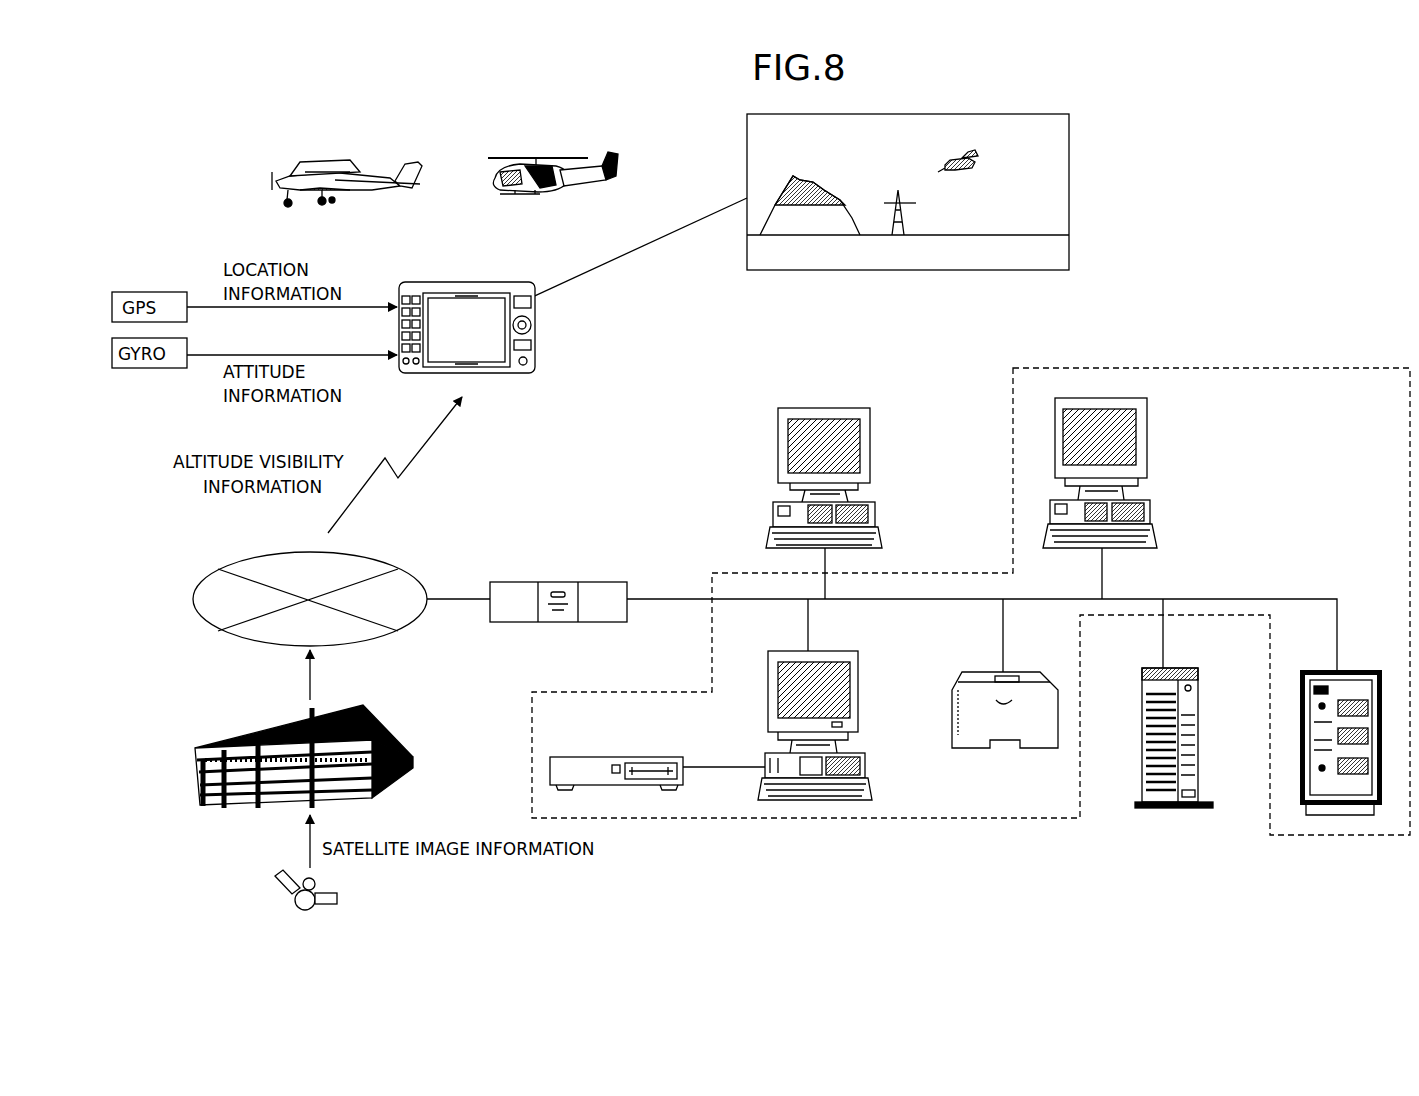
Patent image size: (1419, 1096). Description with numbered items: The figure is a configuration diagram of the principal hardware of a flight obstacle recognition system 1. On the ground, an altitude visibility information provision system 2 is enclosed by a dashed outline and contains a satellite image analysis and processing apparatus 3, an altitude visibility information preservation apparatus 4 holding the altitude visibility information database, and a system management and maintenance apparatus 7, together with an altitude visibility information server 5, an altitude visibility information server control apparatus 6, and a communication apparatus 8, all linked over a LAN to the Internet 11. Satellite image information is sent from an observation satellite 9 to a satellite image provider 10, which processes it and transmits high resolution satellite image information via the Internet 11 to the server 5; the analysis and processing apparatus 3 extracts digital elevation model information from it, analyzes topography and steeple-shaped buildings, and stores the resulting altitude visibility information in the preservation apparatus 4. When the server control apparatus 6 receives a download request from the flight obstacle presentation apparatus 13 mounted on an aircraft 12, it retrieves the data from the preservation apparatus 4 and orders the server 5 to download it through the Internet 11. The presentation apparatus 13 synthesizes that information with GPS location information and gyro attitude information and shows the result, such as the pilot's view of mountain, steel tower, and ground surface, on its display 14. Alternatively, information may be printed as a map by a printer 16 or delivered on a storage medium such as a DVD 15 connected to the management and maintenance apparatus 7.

The flight obstacle recognition system 1 is at (1268, 176).
The altitude visibility information provision system 2 is at (1316, 364).
The satellite image analysis and processing apparatus 3 is at (1147, 436).
The altitude visibility information preservation apparatus 4 is at (1348, 668).
The altitude visibility information server 5 is at (1188, 668).
The altitude visibility information server control apparatus 6 is at (815, 408).
The system management and maintenance apparatus 7 is at (783, 651).
The communication apparatus 8 is at (563, 582).
The observation satellite 9 is at (337, 898).
The satellite image provider 10 is at (405, 780).
The Internet 11 is at (400, 630).
The aircraft 12 is at (495, 158).
The flight obstacle presentation apparatus 13 is at (535, 340).
The display 14 is at (747, 168).
The DVD 15 is at (640, 757).
The printer 16 is at (960, 680).